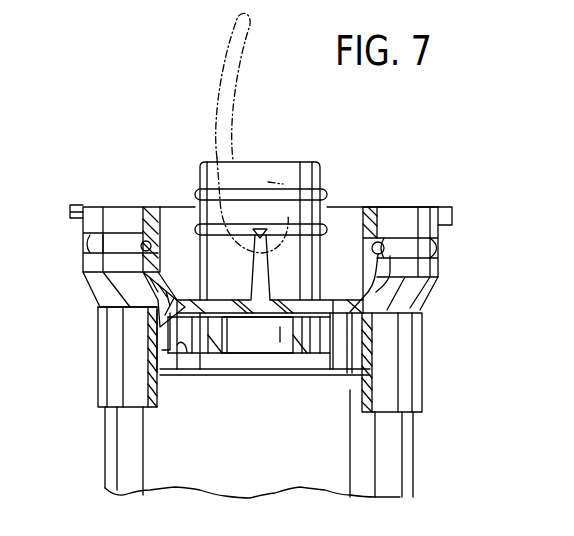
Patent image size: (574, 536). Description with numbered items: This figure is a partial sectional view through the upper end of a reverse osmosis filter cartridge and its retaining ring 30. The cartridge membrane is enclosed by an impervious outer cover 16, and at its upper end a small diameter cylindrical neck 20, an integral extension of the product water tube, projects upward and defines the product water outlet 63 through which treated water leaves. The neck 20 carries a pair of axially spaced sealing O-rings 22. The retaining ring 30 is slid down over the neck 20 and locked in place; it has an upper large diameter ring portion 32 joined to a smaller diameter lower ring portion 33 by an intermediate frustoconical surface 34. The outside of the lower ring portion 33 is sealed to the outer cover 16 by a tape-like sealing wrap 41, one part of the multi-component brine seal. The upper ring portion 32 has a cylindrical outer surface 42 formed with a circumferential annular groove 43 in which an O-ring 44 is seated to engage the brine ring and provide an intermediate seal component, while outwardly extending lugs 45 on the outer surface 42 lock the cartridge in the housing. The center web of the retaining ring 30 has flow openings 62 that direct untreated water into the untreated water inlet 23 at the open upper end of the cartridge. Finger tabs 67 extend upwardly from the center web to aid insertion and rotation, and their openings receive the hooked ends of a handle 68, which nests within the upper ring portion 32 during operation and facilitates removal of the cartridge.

The outer cover 16 is at (127, 445).
The cylindrical neck 20 is at (298, 258).
The sealing O-rings 22 is at (323, 231).
The untreated water inlet 23 is at (178, 356).
The retaining ring 30 is at (125, 212).
The upper large diameter ring portion 32 is at (425, 222).
The lower ring portion 33 is at (347, 357).
The intermediate frustoconical surface 34 is at (413, 290).
The sealing wrap 41 is at (115, 363).
The cylindrical outer surface 42 is at (95, 225).
The circumferential annular groove 43 is at (375, 250).
The O-ring 44 is at (428, 248).
The lugs 45 is at (72, 212).
The flow openings 62 is at (193, 300).
The product water outlet 63 is at (258, 163).
The finger tabs 67 is at (257, 283).
The handle 68 is at (253, 68).